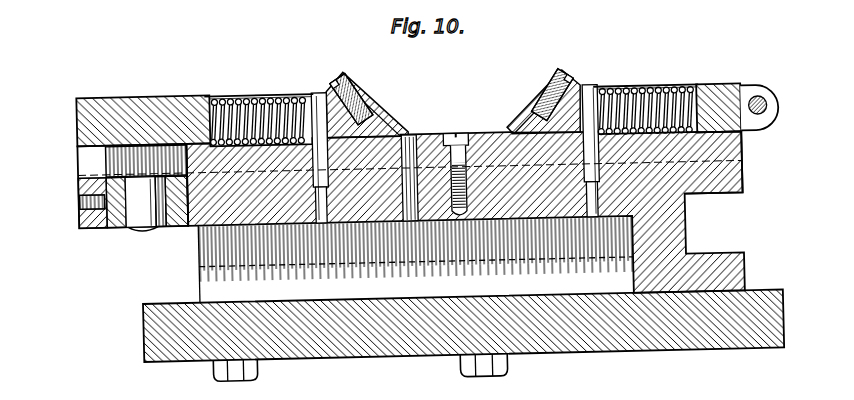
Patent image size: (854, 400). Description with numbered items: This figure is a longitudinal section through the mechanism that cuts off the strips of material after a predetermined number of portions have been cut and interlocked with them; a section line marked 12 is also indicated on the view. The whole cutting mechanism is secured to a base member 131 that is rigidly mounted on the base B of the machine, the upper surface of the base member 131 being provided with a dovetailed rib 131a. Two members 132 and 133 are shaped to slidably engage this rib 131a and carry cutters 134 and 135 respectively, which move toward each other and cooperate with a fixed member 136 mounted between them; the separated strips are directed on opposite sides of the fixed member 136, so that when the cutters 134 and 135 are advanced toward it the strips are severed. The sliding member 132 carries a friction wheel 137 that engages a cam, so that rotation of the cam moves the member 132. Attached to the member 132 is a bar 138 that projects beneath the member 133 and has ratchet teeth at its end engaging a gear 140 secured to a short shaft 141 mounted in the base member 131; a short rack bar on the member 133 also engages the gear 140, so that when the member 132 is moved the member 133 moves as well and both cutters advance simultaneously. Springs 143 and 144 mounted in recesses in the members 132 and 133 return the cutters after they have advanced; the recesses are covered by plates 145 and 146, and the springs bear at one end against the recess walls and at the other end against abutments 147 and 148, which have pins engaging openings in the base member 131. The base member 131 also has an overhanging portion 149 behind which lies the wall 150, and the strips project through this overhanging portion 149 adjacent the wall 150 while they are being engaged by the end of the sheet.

The base member 131 is at (684, 262).
The dovetailed rib 131a is at (730, 165).
The sliding member 132 is at (737, 101).
The sliding member 133 is at (152, 90).
The cutter 134 is at (517, 140).
The cutter 135 is at (404, 136).
The fixed member 136 is at (486, 133).
The friction wheel 137 is at (782, 120).
The bar 138 is at (419, 141).
The gear 140 is at (113, 162).
The short shaft 141 is at (144, 222).
The spring 143 is at (695, 99).
The spring 144 is at (227, 102).
The plate 145 is at (663, 99).
The plate 146 is at (290, 100).
The abutment 147 is at (595, 107).
The abutment 148 is at (325, 101).
The overhanging portion 149 is at (392, 228).
The wall 150 is at (392, 275).
The section line 12- 12 is at (318, 104).
The base B is at (436, 349).